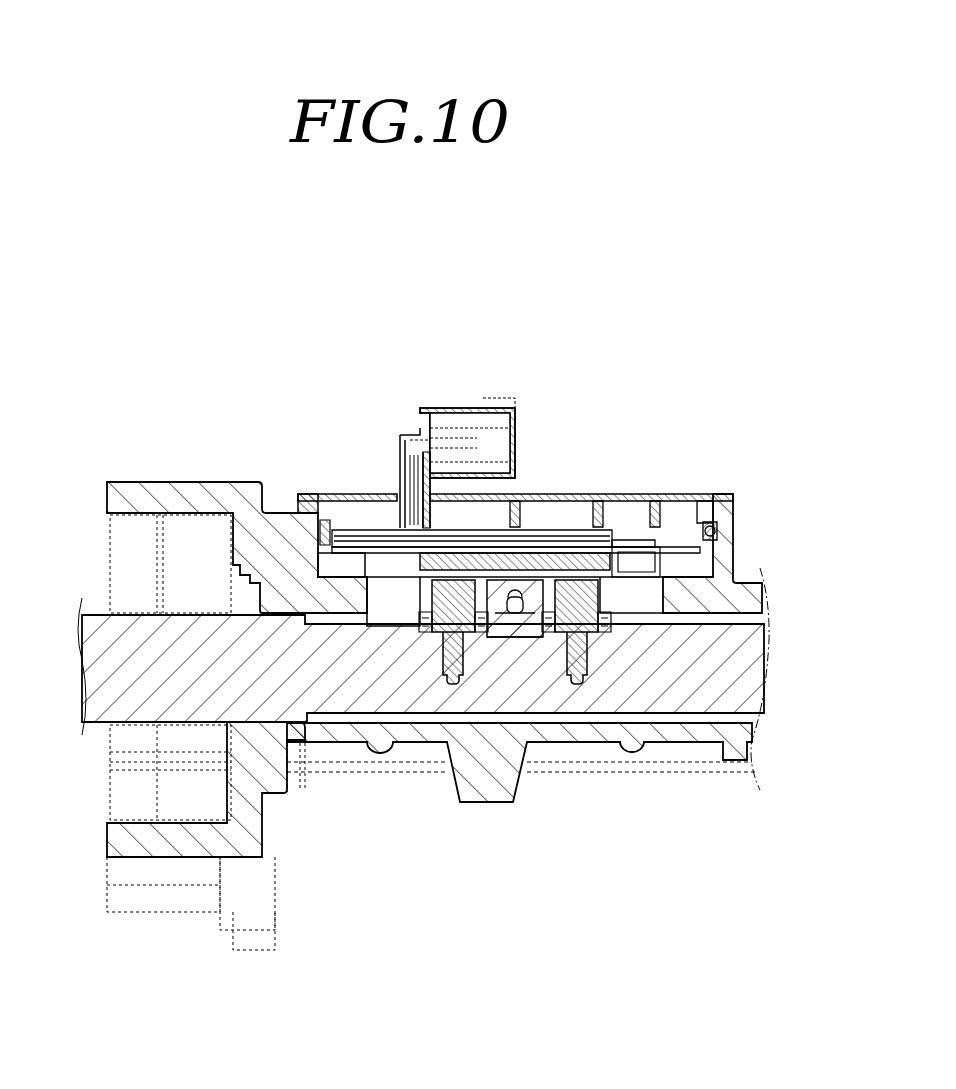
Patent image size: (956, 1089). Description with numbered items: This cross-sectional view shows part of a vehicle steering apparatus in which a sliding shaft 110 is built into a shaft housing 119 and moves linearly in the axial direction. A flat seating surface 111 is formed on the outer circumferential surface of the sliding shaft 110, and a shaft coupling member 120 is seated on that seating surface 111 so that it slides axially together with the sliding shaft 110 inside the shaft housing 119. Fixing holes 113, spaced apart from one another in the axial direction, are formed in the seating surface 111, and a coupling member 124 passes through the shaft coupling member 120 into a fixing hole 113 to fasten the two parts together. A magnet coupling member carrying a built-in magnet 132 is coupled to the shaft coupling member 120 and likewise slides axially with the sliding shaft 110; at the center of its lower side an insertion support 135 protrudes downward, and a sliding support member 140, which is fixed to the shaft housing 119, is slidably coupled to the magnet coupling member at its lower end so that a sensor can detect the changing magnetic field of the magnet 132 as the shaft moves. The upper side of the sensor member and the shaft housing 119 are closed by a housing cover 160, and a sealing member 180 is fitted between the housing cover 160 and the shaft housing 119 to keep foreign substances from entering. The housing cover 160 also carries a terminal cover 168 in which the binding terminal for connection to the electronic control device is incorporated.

The sliding shaft 110 is at (698, 693).
The seating surface 111 is at (512, 618).
The fixing hole 113 is at (447, 625).
The shaft housing 119 is at (183, 490).
The shaft coupling member 120 is at (600, 527).
The coupling member 124 is at (416, 626).
The magnet 132 is at (533, 560).
The insertion support 135 is at (518, 600).
The sliding support member 140 is at (642, 542).
The housing cover 160 is at (616, 497).
The terminal cover 168 is at (455, 405).
The sealing member 180 is at (713, 525).